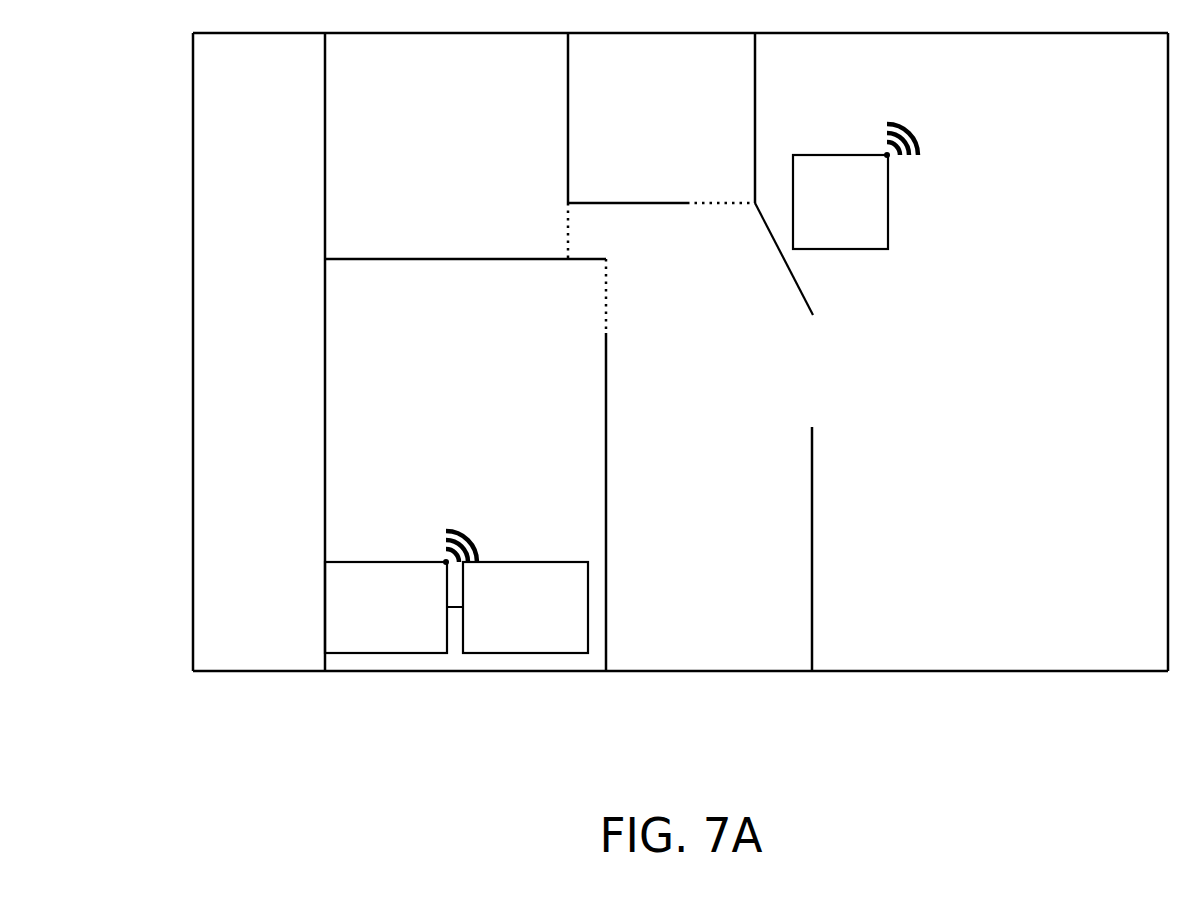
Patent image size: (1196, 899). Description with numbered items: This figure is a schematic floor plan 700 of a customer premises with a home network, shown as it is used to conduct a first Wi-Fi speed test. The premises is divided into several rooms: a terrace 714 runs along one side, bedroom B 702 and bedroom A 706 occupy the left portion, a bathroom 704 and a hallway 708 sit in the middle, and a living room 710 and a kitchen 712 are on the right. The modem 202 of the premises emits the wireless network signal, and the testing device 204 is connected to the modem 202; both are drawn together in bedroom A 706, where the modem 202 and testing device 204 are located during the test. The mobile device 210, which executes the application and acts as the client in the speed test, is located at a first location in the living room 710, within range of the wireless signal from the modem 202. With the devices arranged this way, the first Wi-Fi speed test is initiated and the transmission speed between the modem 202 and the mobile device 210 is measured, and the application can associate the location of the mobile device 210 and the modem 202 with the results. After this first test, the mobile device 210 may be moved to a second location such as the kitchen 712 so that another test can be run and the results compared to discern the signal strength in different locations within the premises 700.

The floor plan 700 is at (145, 328).
The Bedroom B 702 is at (389, 246).
The Bathroom 704 is at (642, 144).
The bedroom A 706 is at (444, 472).
The Hallway 708 is at (698, 540).
The living room 710 is at (984, 259).
The kitchen 712 is at (896, 584).
The Terrace 714 is at (239, 371).
The mobile device 210 is at (812, 155).
The modem 202 is at (368, 634).
The testing device 204 is at (509, 649).